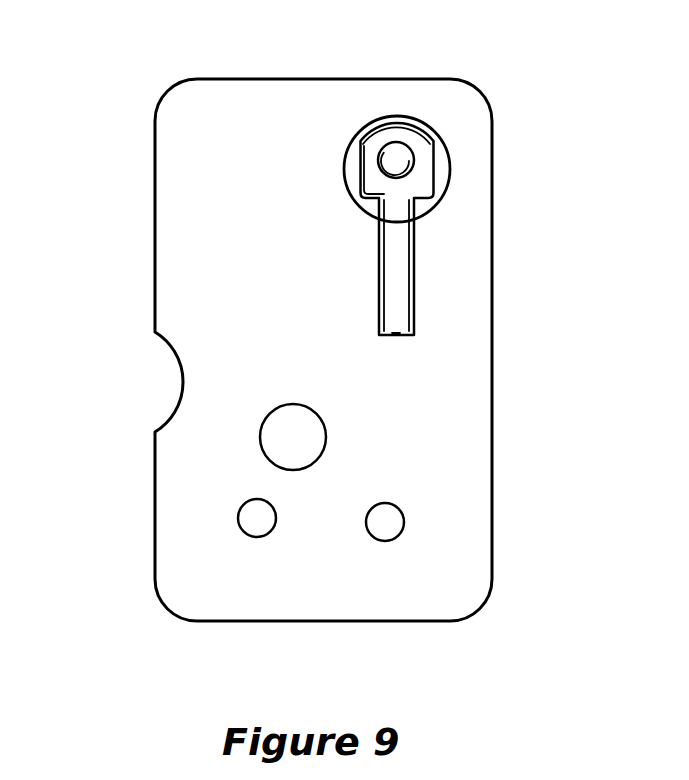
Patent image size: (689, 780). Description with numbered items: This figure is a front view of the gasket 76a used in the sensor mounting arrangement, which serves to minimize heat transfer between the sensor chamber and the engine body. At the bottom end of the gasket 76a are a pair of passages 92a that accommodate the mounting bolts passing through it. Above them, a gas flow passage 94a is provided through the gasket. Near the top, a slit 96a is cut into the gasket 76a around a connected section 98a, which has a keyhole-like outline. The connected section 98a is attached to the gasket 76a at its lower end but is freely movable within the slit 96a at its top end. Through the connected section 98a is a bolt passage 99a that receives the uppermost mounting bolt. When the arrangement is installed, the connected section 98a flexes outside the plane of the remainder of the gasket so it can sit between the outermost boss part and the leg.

The gasket 76a is at (143, 122).
The passages 92a is at (240, 525).
The gas flow passage 94a is at (313, 415).
The slit 96a is at (445, 172).
The connected section 98a is at (422, 203).
The bolt passage 99a is at (410, 147).